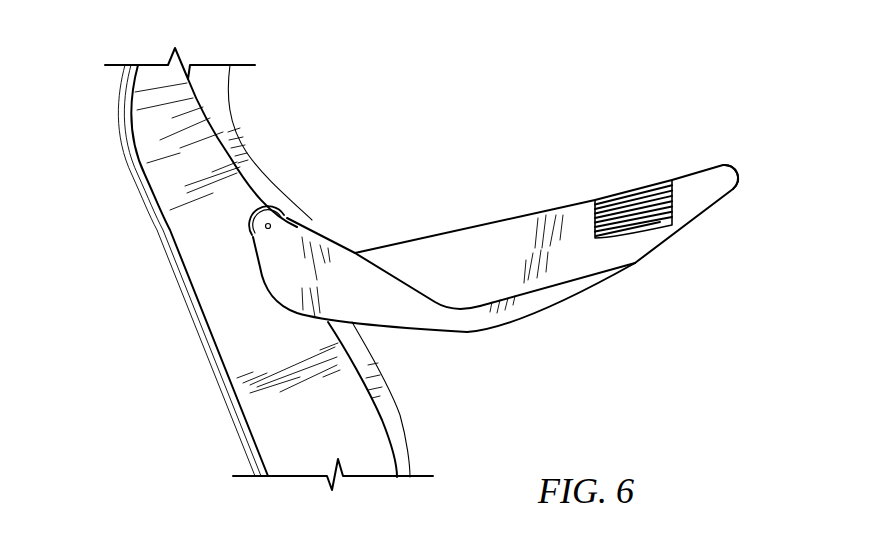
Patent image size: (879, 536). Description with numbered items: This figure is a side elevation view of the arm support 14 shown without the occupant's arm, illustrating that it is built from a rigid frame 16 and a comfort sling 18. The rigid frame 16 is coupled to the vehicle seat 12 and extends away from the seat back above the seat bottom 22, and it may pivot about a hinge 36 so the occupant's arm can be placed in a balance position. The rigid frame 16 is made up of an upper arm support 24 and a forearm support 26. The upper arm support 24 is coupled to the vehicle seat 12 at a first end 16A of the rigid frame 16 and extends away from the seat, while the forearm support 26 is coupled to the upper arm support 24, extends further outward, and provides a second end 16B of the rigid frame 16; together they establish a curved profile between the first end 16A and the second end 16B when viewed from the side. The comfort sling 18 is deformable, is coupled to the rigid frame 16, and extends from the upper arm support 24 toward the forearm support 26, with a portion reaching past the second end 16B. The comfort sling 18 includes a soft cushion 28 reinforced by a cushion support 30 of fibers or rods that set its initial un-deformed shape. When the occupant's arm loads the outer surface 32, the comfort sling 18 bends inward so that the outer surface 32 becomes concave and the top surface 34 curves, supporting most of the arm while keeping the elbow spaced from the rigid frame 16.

The vehicle seat 12 is at (98, 98).
The arm support 14 is at (420, 130).
The rigid frame 16 is at (302, 222).
The first end of the rigid frame 16A is at (252, 221).
The second end of the rigid frame 16B is at (633, 265).
The comfort sling 18 is at (436, 228).
The seat bottom 22 is at (162, 182).
The upper arm support 24 is at (285, 297).
The forearm support 26 is at (573, 293).
The soft cushion 28 is at (511, 243).
The cushion support 30 is at (625, 180).
The outer surface 32 is at (583, 253).
The top surface 34 is at (705, 162).
The hinge 36 is at (269, 224).